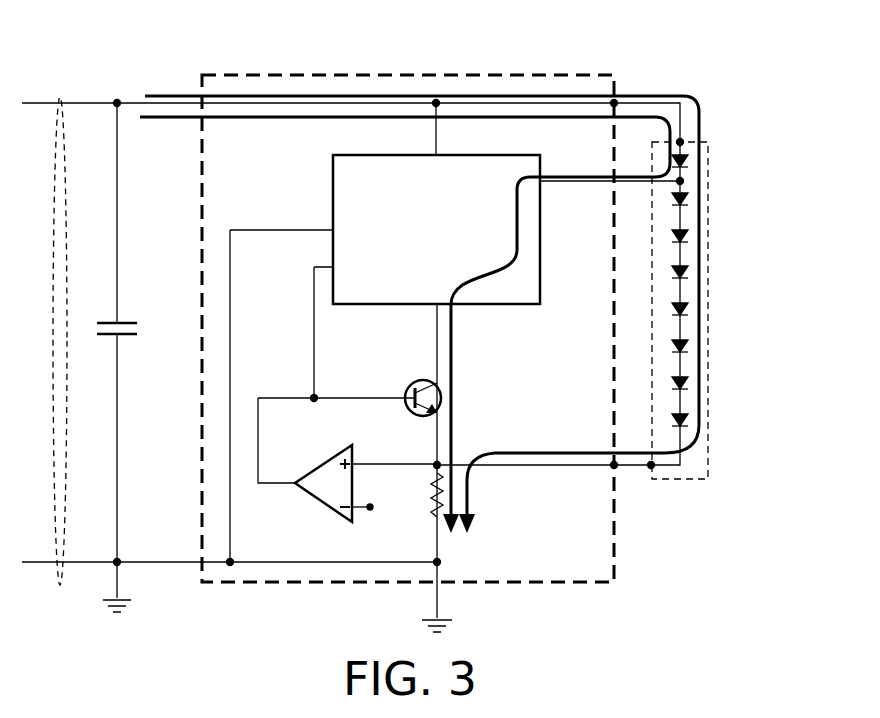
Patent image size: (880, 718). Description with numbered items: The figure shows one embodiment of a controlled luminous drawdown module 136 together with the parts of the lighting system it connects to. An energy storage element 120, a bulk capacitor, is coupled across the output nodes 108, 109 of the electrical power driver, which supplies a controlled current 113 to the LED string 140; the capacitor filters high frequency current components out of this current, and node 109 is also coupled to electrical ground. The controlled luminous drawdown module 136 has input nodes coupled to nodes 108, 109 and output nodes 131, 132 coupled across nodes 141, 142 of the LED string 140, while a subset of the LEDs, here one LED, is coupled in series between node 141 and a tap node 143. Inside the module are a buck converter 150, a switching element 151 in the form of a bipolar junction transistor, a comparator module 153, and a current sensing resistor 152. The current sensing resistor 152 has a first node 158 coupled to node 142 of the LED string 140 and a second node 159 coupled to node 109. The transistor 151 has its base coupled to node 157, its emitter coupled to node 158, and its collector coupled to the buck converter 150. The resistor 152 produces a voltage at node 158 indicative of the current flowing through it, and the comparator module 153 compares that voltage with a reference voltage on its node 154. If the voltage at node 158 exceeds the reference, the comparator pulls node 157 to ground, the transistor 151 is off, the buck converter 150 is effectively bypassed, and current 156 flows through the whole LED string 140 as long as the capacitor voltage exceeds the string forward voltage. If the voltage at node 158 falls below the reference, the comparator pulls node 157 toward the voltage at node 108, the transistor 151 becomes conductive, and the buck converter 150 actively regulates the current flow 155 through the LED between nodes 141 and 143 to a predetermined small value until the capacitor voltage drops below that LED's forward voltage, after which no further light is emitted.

The output node 108 is at (117, 103).
The output node 109 is at (115, 564).
The controlled current 113 is at (60, 97).
The energy storage element 120 is at (135, 336).
The output node 131 is at (614, 103).
The output node 132 is at (616, 467).
The controlled luminous drawdown module 136 is at (410, 75).
The LED string 140 is at (708, 290).
The node 141 is at (680, 142).
The node 142 is at (653, 467).
The node 143 is at (683, 181).
The buck converter 150 is at (455, 358).
The switching element 151 is at (412, 385).
The current sensing resistor 152 is at (432, 485).
The comparator module 153 is at (320, 505).
The node 154 is at (370, 512).
The current flow 155 is at (452, 378).
The current 156 is at (546, 454).
The node 157 is at (314, 398).
The first node 158 is at (437, 465).
The second node 159 is at (443, 563).